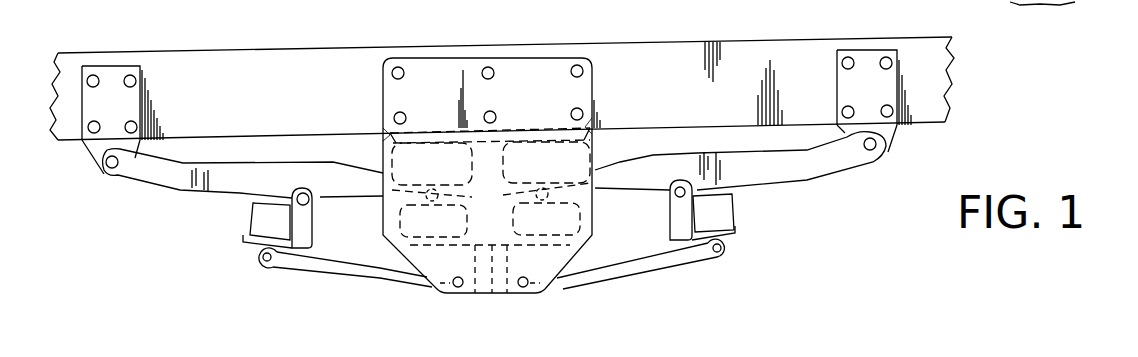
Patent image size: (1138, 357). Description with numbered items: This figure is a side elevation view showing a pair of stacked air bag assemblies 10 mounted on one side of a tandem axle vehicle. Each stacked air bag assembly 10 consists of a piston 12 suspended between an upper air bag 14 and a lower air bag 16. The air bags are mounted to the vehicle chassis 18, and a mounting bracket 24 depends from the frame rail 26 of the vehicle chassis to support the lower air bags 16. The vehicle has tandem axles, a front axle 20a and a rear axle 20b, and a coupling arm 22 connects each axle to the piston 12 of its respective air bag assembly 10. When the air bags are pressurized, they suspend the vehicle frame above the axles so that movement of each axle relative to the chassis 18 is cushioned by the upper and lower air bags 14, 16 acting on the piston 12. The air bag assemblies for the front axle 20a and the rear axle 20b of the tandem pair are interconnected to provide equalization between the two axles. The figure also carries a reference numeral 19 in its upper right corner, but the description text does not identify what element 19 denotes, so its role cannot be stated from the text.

The stacked air bag assembly 10 is at (593, 150).
The piston 12 is at (527, 189).
The upper air bag 14 is at (383, 128).
The lower air bag 16 is at (383, 225).
The vehicle chassis 18 is at (660, 52).
The lower tie links 19 is at (1040, 5).
The front axle 20a is at (250, 222).
The rear axle 20b is at (727, 215).
The coupling arm 22 is at (168, 183).
The mounting bracket 24 is at (465, 62).
The frame rail 26 is at (747, 42).